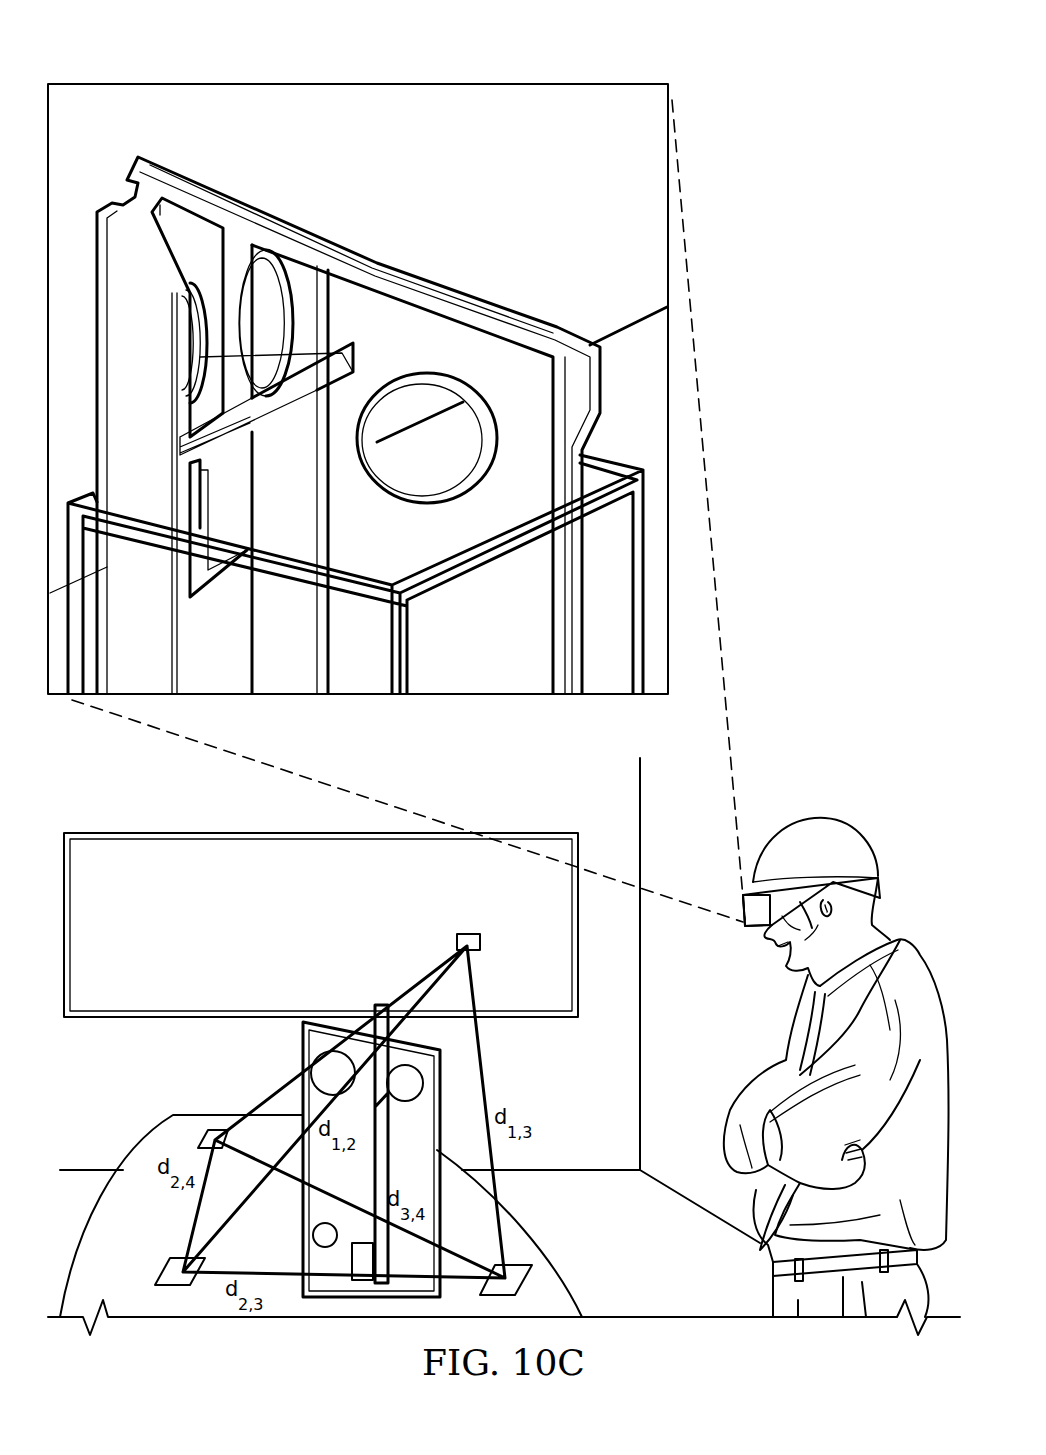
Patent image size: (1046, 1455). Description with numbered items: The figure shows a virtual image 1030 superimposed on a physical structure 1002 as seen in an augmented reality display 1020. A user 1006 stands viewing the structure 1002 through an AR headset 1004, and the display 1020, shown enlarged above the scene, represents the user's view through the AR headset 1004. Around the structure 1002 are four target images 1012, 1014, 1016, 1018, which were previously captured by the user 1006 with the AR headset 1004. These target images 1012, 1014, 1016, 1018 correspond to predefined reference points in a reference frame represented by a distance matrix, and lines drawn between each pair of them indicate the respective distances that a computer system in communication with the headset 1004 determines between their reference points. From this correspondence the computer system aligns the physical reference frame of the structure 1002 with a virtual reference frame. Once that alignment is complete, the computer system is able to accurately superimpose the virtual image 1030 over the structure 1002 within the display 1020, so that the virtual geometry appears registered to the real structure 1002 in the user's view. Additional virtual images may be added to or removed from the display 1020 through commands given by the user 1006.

The structure 1002 is at (262, 218).
The AR headset 1004 is at (750, 926).
The user 1006 is at (790, 1042).
The target image 1012 is at (470, 934).
The target image 1014 is at (178, 1258).
The target image 1016 is at (510, 1265).
The target image 1018 is at (213, 1130).
The display 1020 is at (203, 52).
The virtual image 1030 is at (402, 241).